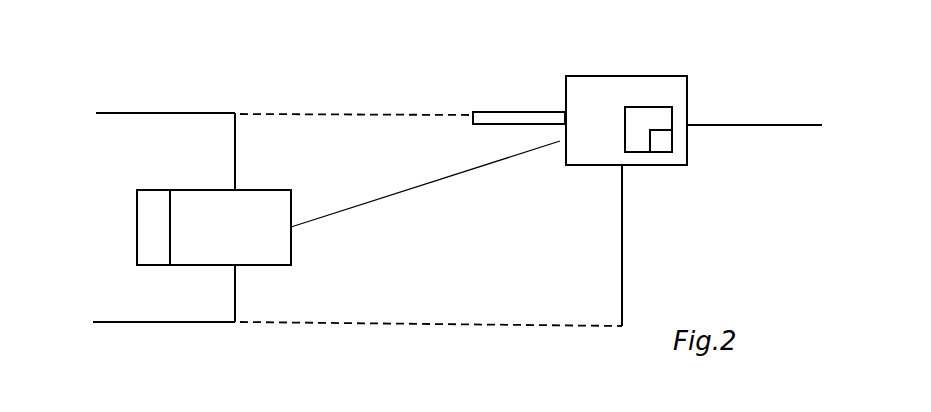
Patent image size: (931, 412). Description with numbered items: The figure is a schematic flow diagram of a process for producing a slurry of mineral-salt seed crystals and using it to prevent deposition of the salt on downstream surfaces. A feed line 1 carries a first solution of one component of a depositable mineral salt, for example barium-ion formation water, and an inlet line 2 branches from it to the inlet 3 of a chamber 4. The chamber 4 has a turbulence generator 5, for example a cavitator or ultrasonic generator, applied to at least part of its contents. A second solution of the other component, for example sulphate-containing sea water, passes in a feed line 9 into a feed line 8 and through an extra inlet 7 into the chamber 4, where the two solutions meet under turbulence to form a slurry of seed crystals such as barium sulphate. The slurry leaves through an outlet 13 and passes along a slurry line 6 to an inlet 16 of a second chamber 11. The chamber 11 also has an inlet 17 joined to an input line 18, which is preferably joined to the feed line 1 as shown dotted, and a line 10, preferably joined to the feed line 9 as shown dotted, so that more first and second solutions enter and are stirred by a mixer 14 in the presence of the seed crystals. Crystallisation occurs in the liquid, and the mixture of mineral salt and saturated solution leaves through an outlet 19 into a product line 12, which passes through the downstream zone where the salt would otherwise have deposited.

The feed line 1 is at (170, 113).
The inlet line 2 is at (235, 143).
The inlet 3 is at (235, 190).
The chamber 4 is at (230, 227).
The turbulence generator 5 is at (153, 234).
The slurry line 6 is at (437, 178).
The extra inlet 7 is at (235, 266).
The feed line 8 is at (235, 293).
The feed line 9 is at (153, 322).
The line 10 is at (622, 225).
The chamber 11 is at (640, 93).
The product line 12 is at (778, 125).
The outlet 13 is at (291, 228).
The mixer 14 is at (662, 143).
The inlet 16 is at (565, 140).
The inlet 17 is at (565, 114).
The input line 18 is at (507, 112).
The outlet 19 is at (690, 122).